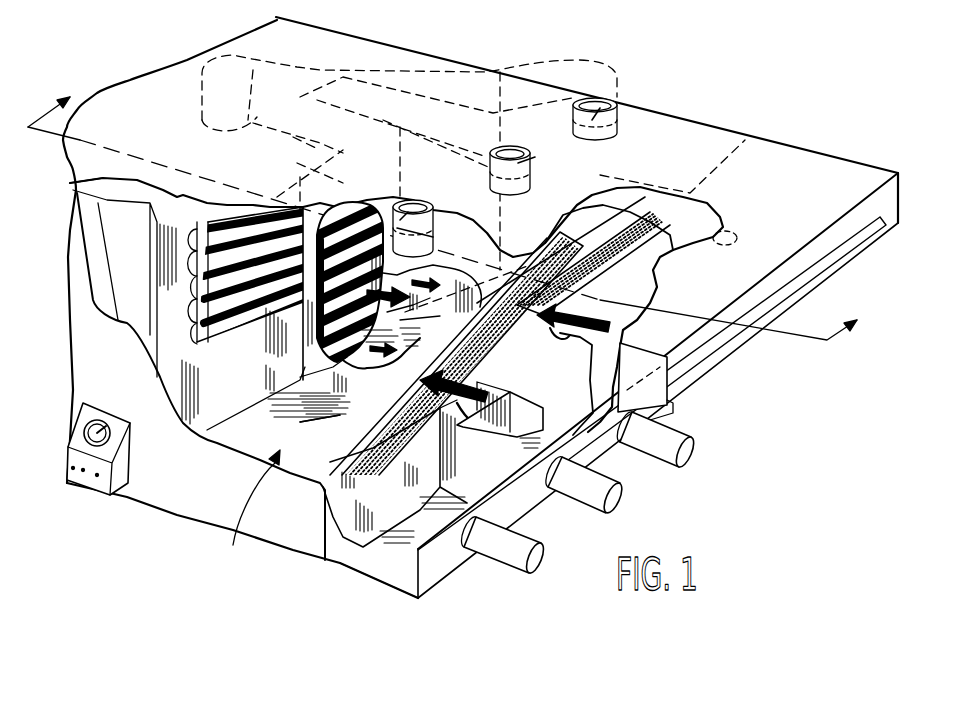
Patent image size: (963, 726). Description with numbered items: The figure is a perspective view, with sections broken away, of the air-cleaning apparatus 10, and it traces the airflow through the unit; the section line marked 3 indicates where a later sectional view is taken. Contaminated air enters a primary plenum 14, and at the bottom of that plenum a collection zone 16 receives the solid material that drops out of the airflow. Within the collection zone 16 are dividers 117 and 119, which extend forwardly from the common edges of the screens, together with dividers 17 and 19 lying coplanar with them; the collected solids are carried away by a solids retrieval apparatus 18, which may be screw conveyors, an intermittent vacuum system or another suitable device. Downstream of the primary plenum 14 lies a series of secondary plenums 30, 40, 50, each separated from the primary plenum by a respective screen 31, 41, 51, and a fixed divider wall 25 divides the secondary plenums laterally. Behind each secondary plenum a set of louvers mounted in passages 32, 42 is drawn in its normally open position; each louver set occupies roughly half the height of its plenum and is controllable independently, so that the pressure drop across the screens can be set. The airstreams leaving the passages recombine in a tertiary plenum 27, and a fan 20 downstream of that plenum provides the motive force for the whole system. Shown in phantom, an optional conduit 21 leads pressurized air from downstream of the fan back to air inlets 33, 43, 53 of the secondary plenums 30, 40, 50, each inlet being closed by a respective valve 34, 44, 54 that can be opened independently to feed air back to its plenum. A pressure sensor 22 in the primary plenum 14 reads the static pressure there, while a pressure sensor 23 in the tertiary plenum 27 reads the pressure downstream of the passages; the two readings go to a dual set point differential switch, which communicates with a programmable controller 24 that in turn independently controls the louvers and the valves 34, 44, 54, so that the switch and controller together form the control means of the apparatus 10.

The apparatus 10 is at (725, 120).
The primary plenum 14 is at (803, 160).
The collection zone 16 is at (377, 547).
The divider 17 is at (491, 474).
The solids retrieval apparatus 18 is at (507, 548).
The divider 19 is at (600, 445).
The fan 20 is at (130, 282).
The conduit 21 is at (227, 50).
The pressure sensor 22 is at (733, 231).
The pressure sensor 23 is at (316, 153).
The programmable controller 24 is at (100, 487).
The fixed divider wall 25 is at (380, 413).
The tertiary plenum 27 is at (70, 183).
The secondary plenum 30 is at (250, 513).
The screen 31 is at (413, 437).
The louvers mounted in passage 32 is at (233, 313).
The air inlet 33 is at (410, 260).
The valve 34 is at (408, 212).
The secondary plenum 40 is at (352, 368).
The screen 41 is at (520, 389).
The louvers mounted in passage 42 is at (347, 362).
The air inlet 43 is at (533, 180).
The valve 44 is at (535, 157).
The secondary plenum 50 is at (412, 280).
The screen 51 is at (653, 257).
The air inlet 53 is at (613, 120).
The valve 54 is at (600, 108).
The divider 117 is at (517, 483).
The divider 119 is at (607, 323).
The section line 3 is at (454, 205).